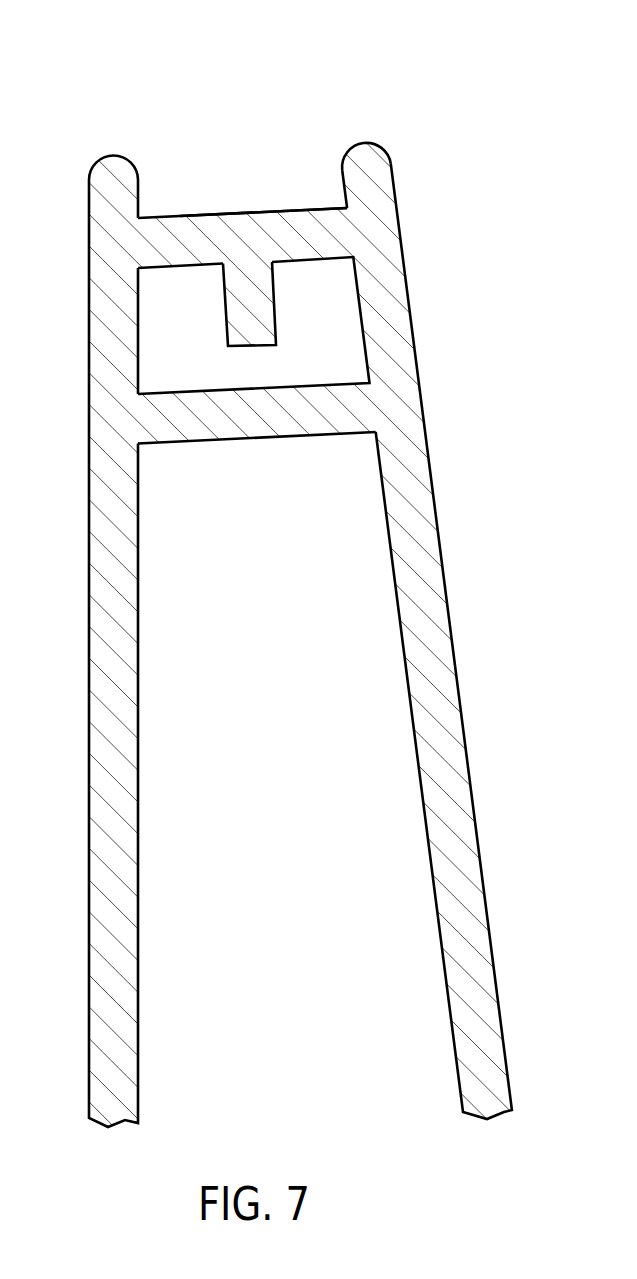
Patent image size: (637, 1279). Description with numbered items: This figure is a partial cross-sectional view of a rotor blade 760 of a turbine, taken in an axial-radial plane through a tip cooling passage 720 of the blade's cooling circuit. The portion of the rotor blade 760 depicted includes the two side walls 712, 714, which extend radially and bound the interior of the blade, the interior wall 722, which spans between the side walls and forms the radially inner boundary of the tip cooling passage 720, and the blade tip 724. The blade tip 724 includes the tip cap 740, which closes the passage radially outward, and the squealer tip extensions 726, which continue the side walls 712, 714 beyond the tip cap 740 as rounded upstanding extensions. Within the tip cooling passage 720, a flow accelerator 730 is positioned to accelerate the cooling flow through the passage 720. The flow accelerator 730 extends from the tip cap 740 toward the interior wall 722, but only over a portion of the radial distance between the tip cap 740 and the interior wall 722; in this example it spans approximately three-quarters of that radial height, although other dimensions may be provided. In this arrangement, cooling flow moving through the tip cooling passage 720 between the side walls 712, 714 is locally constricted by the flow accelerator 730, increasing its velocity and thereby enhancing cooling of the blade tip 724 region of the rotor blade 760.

The rotor blade 760 is at (183, 108).
The side wall 712 is at (92, 583).
The side wall 714 is at (430, 509).
The tip cooling passage 720 is at (352, 348).
The interior wall 722 is at (250, 428).
The blade tip 724 is at (263, 193).
The squealer tip extension 726 is at (390, 157).
The flow accelerator 730 is at (268, 315).
The tip cap 740 is at (193, 226).